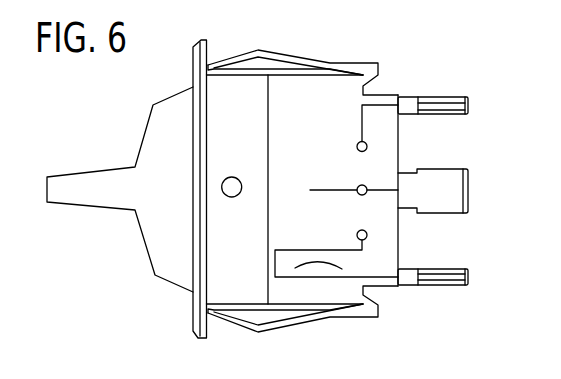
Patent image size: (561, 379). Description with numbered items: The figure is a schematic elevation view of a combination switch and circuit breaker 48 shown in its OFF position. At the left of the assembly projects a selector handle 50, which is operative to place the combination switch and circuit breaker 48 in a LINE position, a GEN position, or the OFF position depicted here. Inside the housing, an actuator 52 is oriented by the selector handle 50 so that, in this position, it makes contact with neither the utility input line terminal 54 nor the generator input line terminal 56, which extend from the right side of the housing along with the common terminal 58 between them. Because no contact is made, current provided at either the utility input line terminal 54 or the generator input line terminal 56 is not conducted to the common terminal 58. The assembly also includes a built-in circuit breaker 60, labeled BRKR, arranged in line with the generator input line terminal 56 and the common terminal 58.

The combination switch and circuit breaker 48 is at (400, 63).
The selector handle 50 is at (88, 184).
The actuator 52 is at (327, 190).
The utility input line terminal 54 is at (460, 109).
The generator input line terminal 56 is at (462, 275).
The common terminal 58 is at (460, 192).
The built-in circuit breaker 60 is at (313, 303).